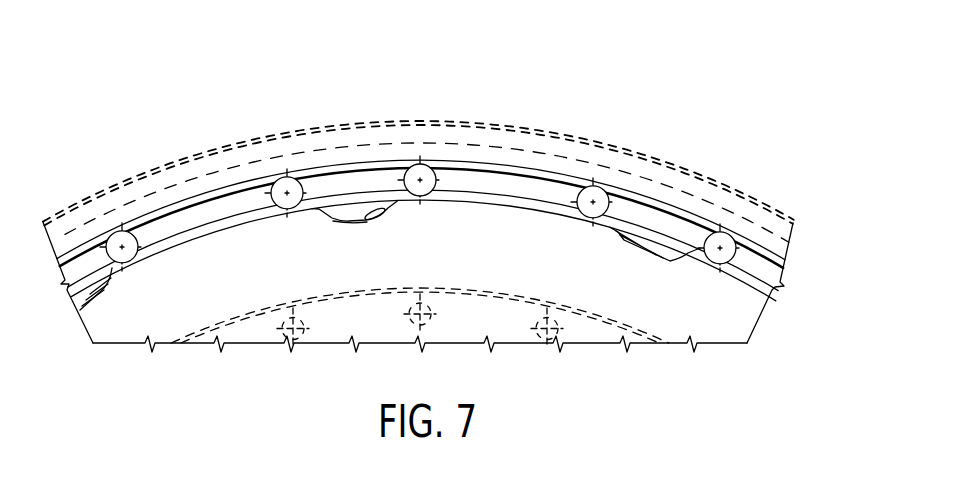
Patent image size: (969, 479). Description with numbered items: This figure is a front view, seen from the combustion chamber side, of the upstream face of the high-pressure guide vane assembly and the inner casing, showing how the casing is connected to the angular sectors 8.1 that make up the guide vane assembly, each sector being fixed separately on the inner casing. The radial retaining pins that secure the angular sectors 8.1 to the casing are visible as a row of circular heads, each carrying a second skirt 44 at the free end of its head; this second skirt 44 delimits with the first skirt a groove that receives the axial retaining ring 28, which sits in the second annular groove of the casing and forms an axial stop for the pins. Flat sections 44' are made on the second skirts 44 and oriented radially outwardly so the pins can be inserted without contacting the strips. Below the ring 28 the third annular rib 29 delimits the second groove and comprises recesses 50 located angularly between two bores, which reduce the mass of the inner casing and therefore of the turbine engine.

The angular sector 8.1 is at (213, 133).
The ring 28 is at (653, 238).
The second skirt 44 is at (421, 165).
The flat section 44' is at (410, 127).
The recess 50 is at (368, 221).
The third annular rib 29 is at (738, 308).